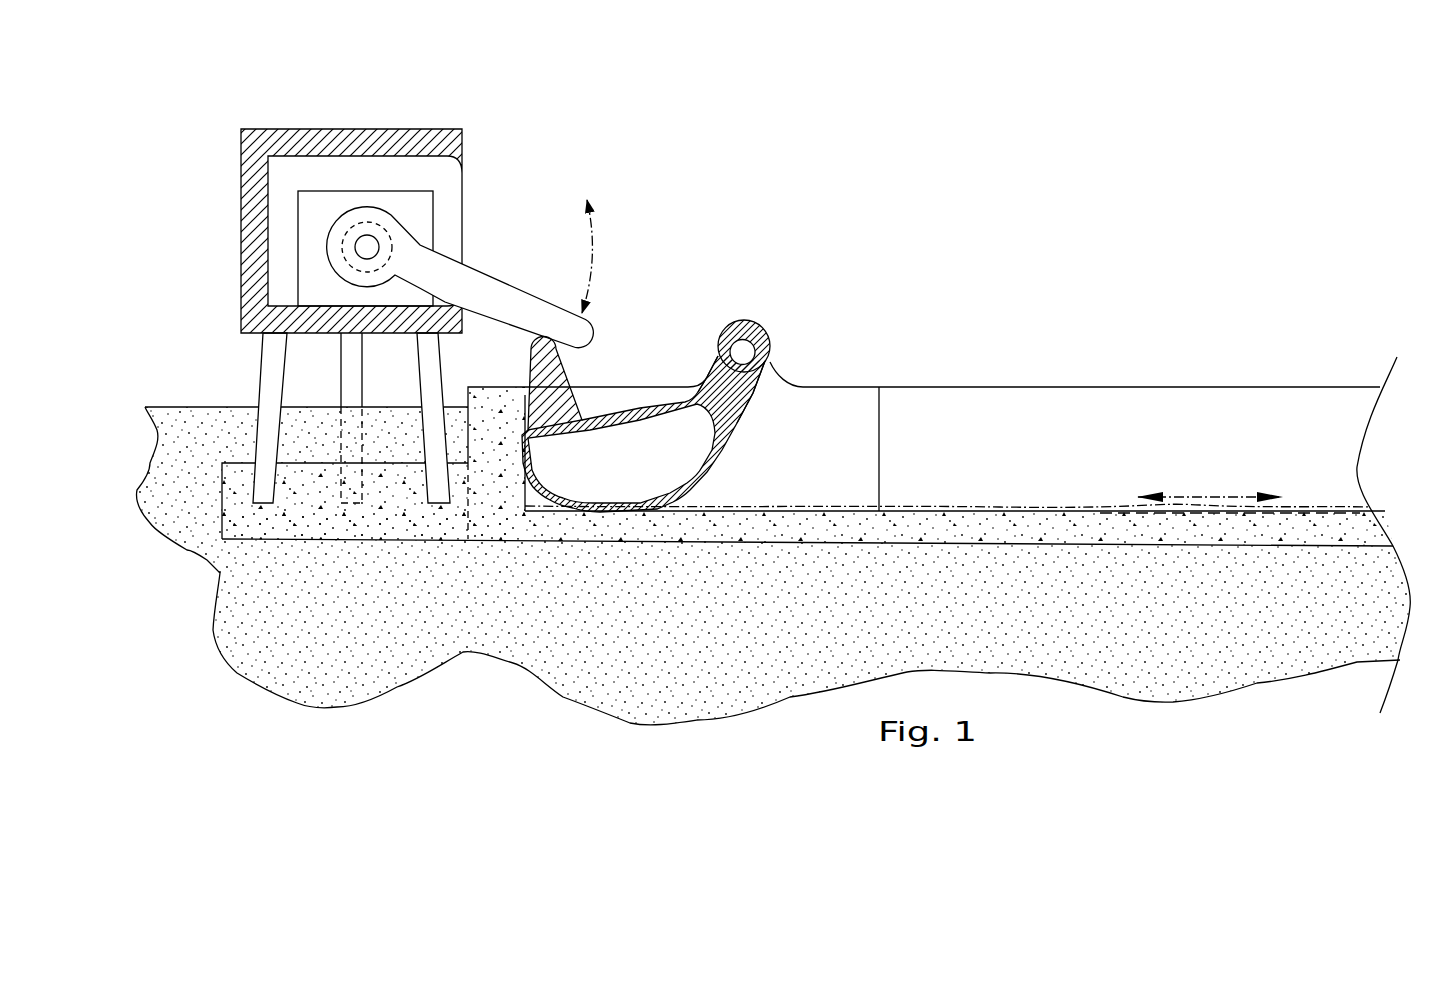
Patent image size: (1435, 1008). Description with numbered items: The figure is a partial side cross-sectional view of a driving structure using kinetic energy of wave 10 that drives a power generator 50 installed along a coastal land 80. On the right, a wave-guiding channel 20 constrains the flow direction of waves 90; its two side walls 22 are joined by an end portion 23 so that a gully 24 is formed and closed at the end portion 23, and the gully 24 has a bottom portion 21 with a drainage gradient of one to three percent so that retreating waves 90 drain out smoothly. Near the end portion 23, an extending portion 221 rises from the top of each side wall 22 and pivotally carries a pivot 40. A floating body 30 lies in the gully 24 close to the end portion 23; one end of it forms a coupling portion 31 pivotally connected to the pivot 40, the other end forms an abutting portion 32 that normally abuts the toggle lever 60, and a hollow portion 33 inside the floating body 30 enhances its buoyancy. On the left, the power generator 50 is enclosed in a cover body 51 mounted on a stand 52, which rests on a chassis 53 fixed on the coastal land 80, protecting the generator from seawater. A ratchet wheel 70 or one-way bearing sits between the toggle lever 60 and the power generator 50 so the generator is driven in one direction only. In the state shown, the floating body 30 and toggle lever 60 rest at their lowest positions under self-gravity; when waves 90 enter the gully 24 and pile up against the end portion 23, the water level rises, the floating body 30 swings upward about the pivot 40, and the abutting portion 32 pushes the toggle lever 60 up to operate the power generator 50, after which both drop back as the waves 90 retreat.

The driving structure using kinetic energy of wave 10 is at (1040, 238).
The wave-guiding channel 20 is at (1168, 385).
The bottom portion 21 is at (1256, 540).
The side wall 22 is at (1100, 385).
The extending portion 221 is at (778, 360).
The end portion 23 is at (481, 388).
The gully 24 is at (1203, 452).
The floating body 30 is at (647, 402).
The coupling portion 31 is at (717, 363).
The abutting portion 32 is at (567, 368).
The hollow portion 33 is at (633, 433).
The pivot 40 is at (778, 342).
The power generator 50 is at (353, 190).
The cover body 51 is at (240, 175).
The stand 52 is at (262, 370).
The chassis 53 is at (290, 525).
The toggle lever 60 is at (517, 288).
The ratchet wheel 70 is at (380, 228).
The coastal land 80 is at (222, 407).
The waves 90 is at (1308, 507).